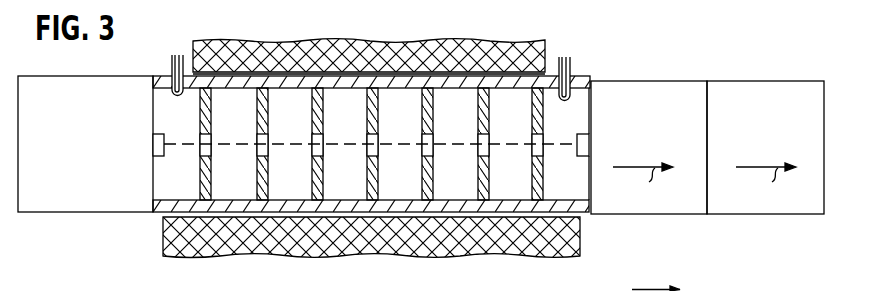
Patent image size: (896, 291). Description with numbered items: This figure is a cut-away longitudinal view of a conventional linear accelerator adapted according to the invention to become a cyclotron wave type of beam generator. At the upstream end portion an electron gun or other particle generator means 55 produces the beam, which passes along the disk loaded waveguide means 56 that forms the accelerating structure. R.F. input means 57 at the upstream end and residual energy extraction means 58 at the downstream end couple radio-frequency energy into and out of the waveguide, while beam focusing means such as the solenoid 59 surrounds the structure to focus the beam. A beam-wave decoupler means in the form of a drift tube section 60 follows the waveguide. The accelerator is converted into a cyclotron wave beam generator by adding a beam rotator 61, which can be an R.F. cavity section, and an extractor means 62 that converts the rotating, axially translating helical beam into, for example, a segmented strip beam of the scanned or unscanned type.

The particle generator means 55 is at (77, 200).
The disk loaded waveguide means 56 is at (268, 212).
The R.F. input means 57 is at (172, 55).
The residual energy extraction means 58 is at (568, 57).
The solenoid 59 is at (405, 40).
The drift tube section 60 is at (585, 160).
The beam rotator 61 is at (630, 81).
The extractor means 62 is at (748, 82).